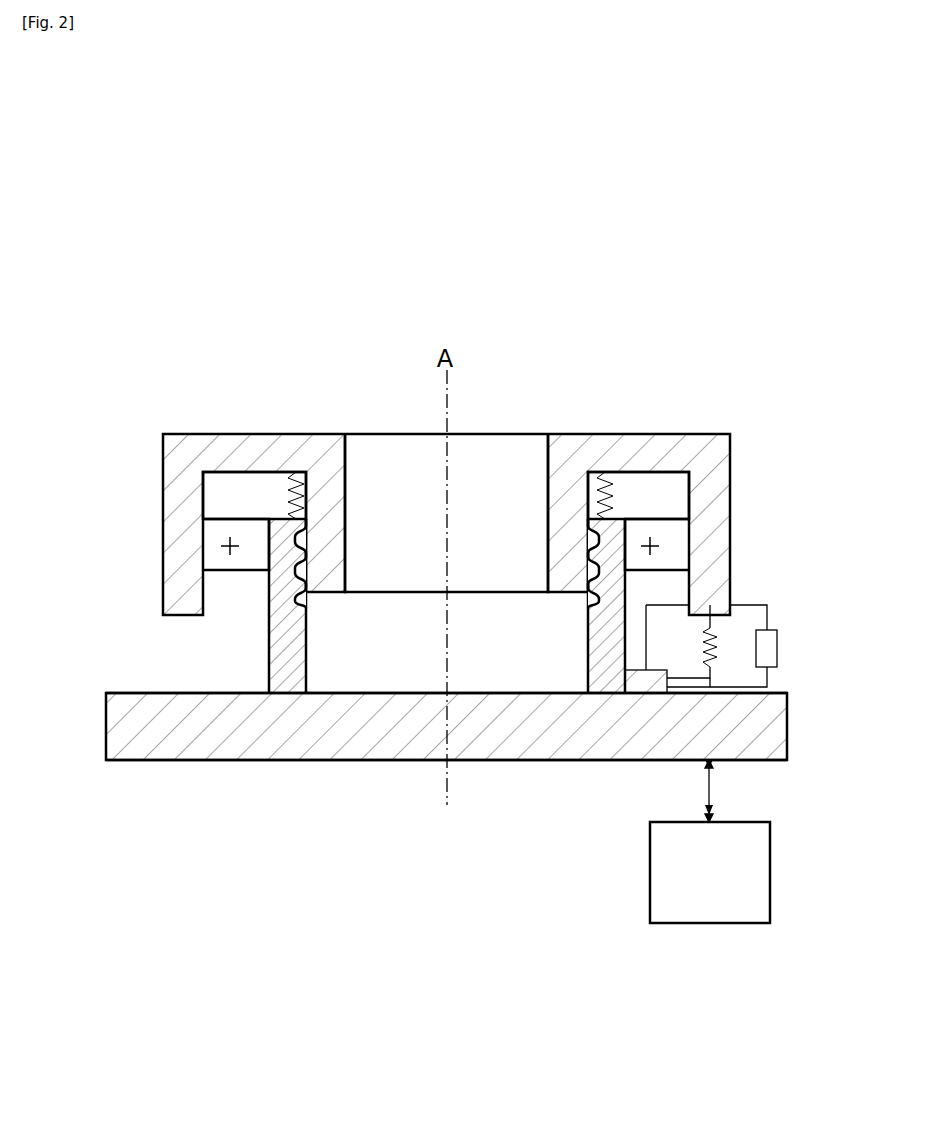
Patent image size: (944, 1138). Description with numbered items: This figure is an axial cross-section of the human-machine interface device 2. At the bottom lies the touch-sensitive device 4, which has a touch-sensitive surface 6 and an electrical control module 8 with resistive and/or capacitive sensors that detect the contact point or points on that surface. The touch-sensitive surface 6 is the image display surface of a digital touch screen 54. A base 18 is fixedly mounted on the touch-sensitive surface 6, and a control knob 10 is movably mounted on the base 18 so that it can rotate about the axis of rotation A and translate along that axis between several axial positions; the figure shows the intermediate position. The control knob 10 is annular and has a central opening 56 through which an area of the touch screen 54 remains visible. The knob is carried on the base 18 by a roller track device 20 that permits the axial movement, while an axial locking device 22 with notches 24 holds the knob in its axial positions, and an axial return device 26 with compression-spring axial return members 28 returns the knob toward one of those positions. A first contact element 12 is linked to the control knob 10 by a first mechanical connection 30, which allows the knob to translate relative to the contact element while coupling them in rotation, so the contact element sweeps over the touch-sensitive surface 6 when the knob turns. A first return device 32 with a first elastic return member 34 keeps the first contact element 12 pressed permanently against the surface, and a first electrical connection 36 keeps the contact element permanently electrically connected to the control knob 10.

The human-machine interface device 2 is at (592, 312).
The touch-sensitive device 4 is at (808, 690).
The touch-sensitive surface 6 is at (779, 692).
The electrical control module 8 is at (703, 888).
The control knob 10 is at (700, 430).
The first contact element 12 is at (645, 693).
The base 18 is at (305, 678).
The roller track device 20 is at (677, 537).
The axial locking device 22 is at (318, 609).
The notch 24 is at (596, 605).
The axial return device 26 is at (620, 489).
The axial return member 28 is at (290, 484).
The first mechanical connection 30 is at (767, 646).
The first return device 32 is at (724, 676).
The first elastic return member 34 is at (708, 646).
The first electrical connection 36 is at (668, 605).
The digital touch screen 54 is at (757, 730).
The central opening 56 is at (388, 470).